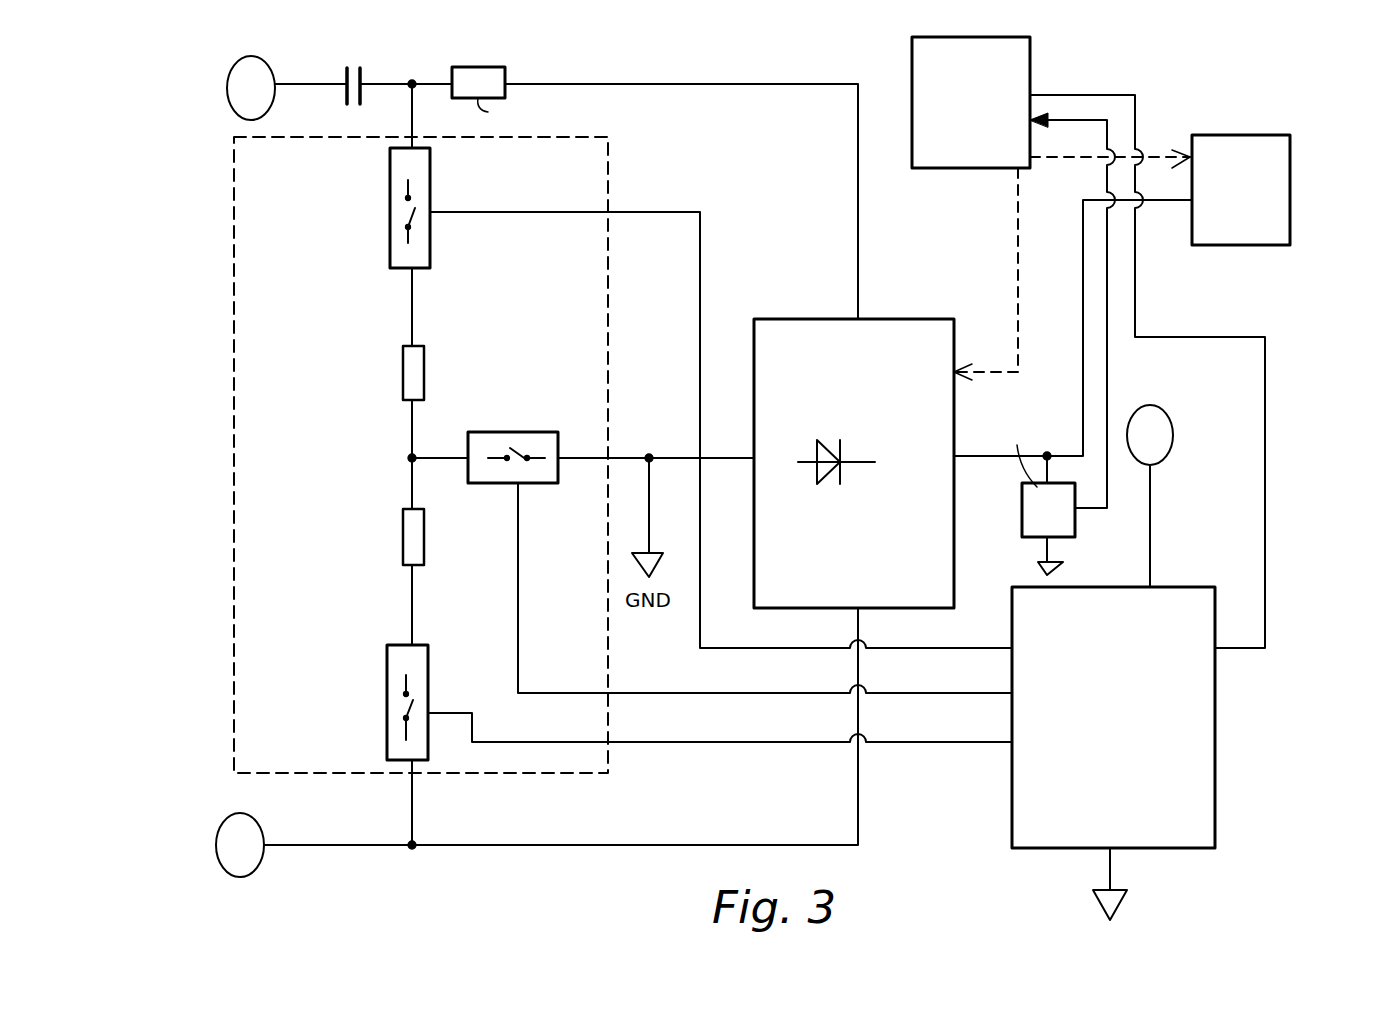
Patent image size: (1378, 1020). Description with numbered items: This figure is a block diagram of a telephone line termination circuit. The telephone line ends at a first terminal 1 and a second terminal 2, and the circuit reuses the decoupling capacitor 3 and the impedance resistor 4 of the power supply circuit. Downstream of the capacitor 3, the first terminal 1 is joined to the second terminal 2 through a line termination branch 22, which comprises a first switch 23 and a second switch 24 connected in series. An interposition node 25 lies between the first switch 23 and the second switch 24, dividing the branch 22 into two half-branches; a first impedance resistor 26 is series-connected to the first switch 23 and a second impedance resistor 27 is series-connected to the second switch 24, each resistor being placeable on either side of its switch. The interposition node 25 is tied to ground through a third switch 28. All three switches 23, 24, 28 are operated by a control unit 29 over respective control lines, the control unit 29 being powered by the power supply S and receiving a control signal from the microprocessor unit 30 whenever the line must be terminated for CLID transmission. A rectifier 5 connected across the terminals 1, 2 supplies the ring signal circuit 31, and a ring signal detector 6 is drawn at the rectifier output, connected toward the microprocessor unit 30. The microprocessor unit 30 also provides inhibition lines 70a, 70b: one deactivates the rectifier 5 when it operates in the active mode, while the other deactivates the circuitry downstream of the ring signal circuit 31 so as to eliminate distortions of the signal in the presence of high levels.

The first terminal 1 is at (308, 84).
The second terminal 2 is at (313, 845).
The decoupling capacitor 3 is at (362, 73).
The impedance resistor 4 is at (493, 75).
The rectifier 5 is at (890, 340).
The ring signal detector 6 is at (1028, 498).
The line termination branch 22 is at (233, 255).
The first switch 23 is at (427, 248).
The second switch 24 is at (427, 687).
The interposition node 25 is at (404, 459).
The first impedance resistor 26 is at (420, 375).
The second impedance resistor 27 is at (417, 542).
The third switch 28 is at (543, 440).
The control unit 29 is at (1203, 763).
The microprocessor unit 30 is at (1025, 75).
The ring signal circuit 31 is at (1288, 193).
The inhibition line 70a is at (1017, 317).
The inhibition line 70b is at (1063, 160).
The power supply S is at (1190, 441).